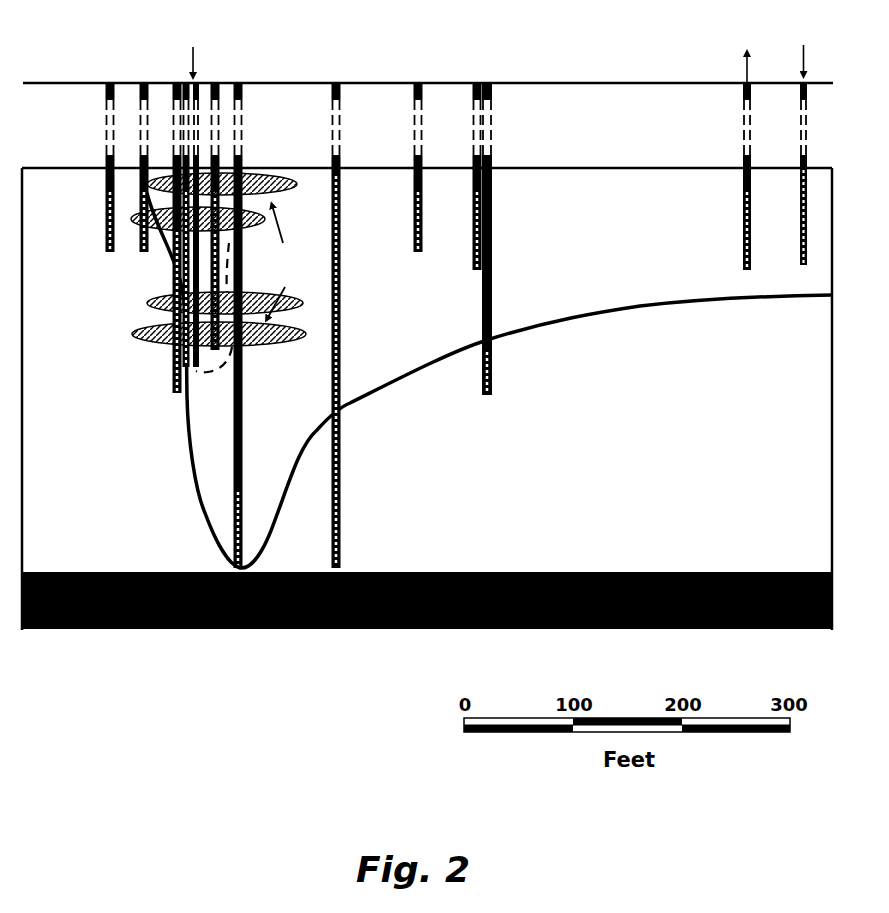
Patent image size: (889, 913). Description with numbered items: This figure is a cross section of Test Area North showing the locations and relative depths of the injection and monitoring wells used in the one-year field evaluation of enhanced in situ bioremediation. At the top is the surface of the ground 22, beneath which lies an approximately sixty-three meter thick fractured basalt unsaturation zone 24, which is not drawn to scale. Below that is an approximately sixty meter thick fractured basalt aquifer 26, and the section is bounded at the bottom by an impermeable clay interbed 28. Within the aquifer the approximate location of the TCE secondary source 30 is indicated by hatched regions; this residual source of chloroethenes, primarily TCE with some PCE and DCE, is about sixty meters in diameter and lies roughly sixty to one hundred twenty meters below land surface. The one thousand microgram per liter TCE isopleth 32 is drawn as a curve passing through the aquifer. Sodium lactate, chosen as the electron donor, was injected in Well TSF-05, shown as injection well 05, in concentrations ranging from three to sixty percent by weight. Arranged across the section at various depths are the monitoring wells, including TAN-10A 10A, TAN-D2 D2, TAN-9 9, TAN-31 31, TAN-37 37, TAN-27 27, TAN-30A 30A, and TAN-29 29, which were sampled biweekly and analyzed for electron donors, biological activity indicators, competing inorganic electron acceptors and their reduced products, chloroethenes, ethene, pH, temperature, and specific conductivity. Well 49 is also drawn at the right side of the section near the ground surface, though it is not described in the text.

The surface of the ground 22 is at (602, 82).
The fractured basalt unsaturation zone 24 is at (427, 142).
The fractured basalt aquifer 26 is at (427, 347).
The impermeable clay interbed 28 is at (713, 571).
The 1,000 μg/L TCE isopleth 32 is at (594, 313).
The TCE secondary source 30 is at (167, 263).
The monitoring well TAN- 10A is at (110, 158).
The monitoring well TAN- D2 is at (144, 158).
The monitoring well TAN- 9 is at (177, 228).
The monitoring well TAN- 31 is at (183, 207).
The injection well TSF- 05 is at (206, 207).
The monitoring well TAN- 37 is at (336, 316).
The monitoring well TAN- 27 is at (418, 158).
The monitoring well TAN- 30A is at (499, 229).
The monitoring well TAN- 29 is at (734, 161).
The injection well 49 is at (790, 155).